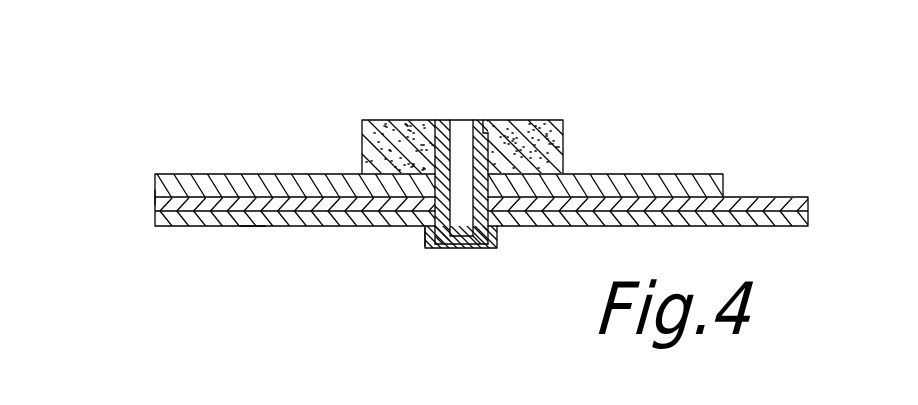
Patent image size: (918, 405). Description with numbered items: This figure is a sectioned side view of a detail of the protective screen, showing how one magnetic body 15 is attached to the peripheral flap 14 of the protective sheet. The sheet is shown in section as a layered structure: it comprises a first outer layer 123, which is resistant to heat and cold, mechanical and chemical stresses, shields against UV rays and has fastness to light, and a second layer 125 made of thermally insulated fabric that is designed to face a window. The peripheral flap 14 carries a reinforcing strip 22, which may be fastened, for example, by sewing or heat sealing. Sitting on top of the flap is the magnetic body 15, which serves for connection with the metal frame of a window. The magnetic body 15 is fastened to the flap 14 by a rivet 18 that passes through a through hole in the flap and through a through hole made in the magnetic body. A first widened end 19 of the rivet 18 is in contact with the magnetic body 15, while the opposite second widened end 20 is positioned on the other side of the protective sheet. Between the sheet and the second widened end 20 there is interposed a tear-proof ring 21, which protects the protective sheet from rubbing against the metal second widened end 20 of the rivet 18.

The peripheral flap 14 is at (843, 197).
The magnetic body 15 is at (565, 137).
The rivet 18 is at (517, 118).
The first widened end 19 is at (437, 118).
The second widened end 20 is at (465, 252).
The tear-proof ring 21 is at (413, 243).
The reinforcing strip 22 is at (281, 173).
The first outer layer 123 is at (252, 227).
The second layer 125 is at (155, 198).